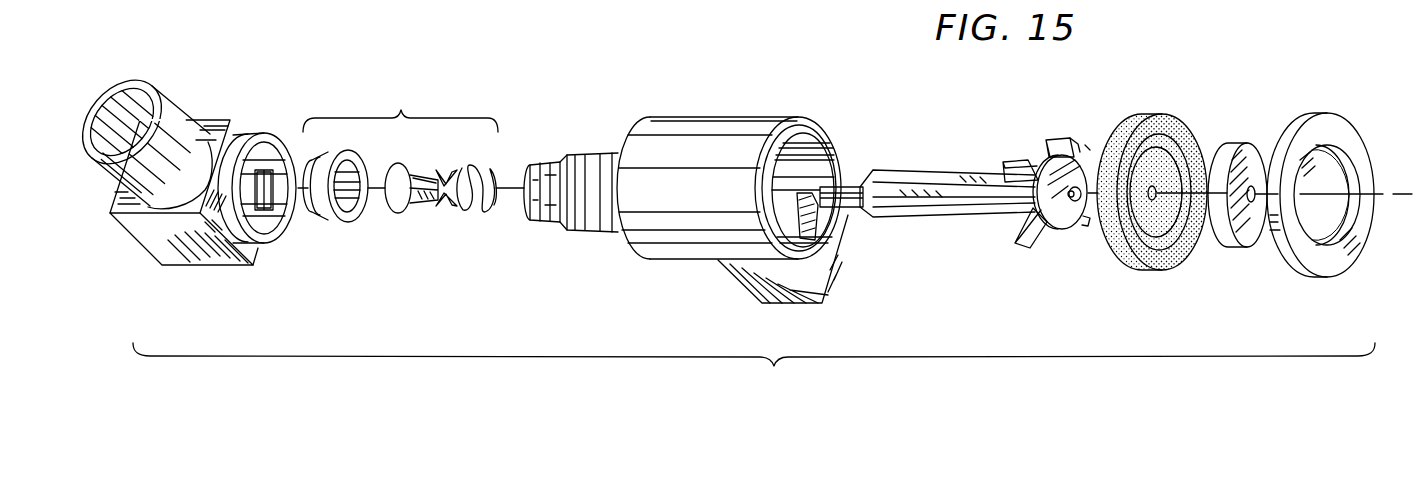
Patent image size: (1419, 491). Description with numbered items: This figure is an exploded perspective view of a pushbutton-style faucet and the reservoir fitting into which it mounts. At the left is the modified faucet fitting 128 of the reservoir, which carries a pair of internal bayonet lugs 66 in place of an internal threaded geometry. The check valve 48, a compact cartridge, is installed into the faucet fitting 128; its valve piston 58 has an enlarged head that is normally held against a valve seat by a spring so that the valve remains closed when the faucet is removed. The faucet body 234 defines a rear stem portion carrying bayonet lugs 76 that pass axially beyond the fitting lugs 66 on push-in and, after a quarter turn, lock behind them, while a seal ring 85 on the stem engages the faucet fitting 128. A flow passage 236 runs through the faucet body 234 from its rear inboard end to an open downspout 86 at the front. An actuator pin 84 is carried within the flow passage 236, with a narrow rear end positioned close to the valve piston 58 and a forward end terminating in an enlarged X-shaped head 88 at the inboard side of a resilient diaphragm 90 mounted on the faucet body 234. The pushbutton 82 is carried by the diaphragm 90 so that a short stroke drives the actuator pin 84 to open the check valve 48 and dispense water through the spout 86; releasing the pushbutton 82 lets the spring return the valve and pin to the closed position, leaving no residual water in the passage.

The faucet fitting 128 is at (234, 256).
The bayonet lugs 66 is at (270, 172).
The check valve 48 is at (401, 112).
The valve piston 58 is at (413, 206).
The bayonet lugs 76 is at (532, 173).
The seal ring 85 is at (582, 153).
The faucet body 234 is at (725, 117).
The flow passage 236 is at (833, 147).
The downspout 86 is at (807, 226).
The actuator pin 84 is at (930, 172).
The X-shaped head 88 is at (1048, 140).
The resilient diaphragm 90 is at (1173, 127).
The pushbutton 82 is at (1248, 232).